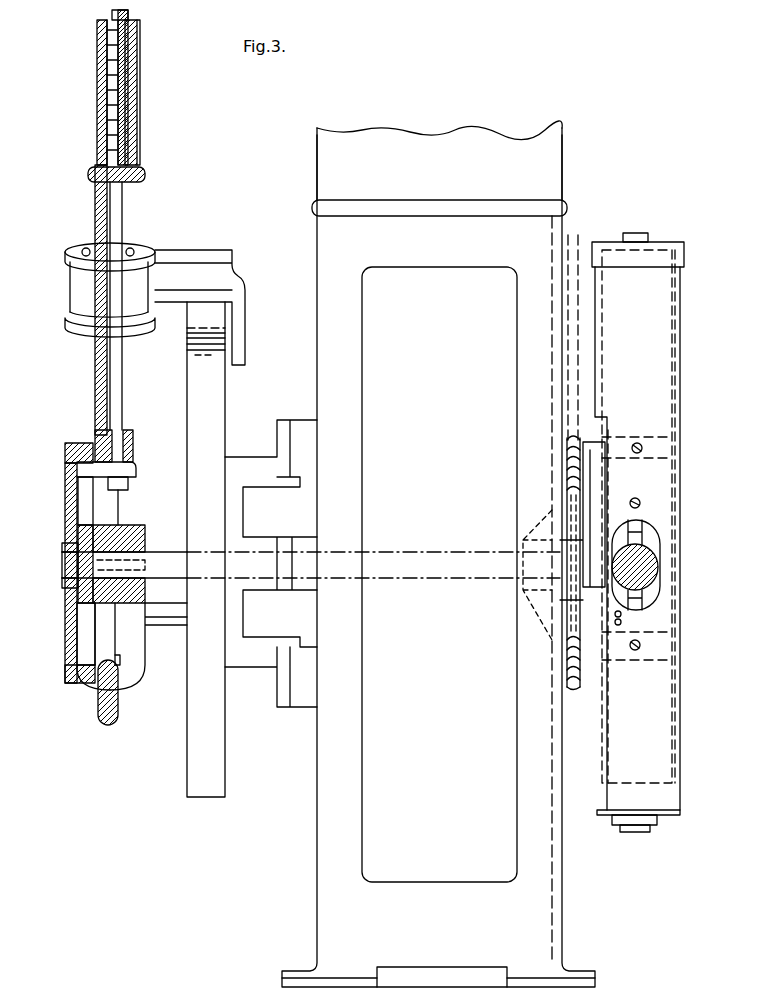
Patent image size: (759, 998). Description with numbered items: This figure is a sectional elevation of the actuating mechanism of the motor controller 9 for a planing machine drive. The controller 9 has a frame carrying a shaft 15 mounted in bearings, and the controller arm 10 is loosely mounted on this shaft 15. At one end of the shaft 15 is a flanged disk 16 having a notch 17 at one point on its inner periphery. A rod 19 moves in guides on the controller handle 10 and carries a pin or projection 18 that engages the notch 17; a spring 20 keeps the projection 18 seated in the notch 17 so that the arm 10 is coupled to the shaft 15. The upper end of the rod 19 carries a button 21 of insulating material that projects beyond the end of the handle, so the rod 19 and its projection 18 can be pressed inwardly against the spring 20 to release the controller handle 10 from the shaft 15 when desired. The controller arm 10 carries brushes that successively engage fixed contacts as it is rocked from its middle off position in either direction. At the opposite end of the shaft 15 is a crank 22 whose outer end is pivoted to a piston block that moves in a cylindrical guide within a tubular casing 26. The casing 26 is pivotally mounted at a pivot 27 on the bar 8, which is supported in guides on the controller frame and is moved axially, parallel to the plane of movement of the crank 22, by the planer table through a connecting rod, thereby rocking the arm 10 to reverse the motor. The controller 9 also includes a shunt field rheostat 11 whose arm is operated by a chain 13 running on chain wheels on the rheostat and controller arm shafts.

The bar 8 is at (626, 595).
The motor controller 9 is at (317, 772).
The controller arm 10 is at (97, 370).
The shunt field rheostat 11 is at (562, 176).
The chain 13 is at (580, 236).
The shaft 15 is at (163, 552).
The flanged disk 16 is at (65, 476).
The notch 17 is at (66, 450).
The projection 18 is at (106, 493).
The rod 19 is at (122, 356).
The spring 20 is at (132, 84).
The button 21 is at (128, 13).
The crank 22 is at (583, 503).
The tubular casing 26 is at (638, 532).
The pivot 27 is at (650, 560).